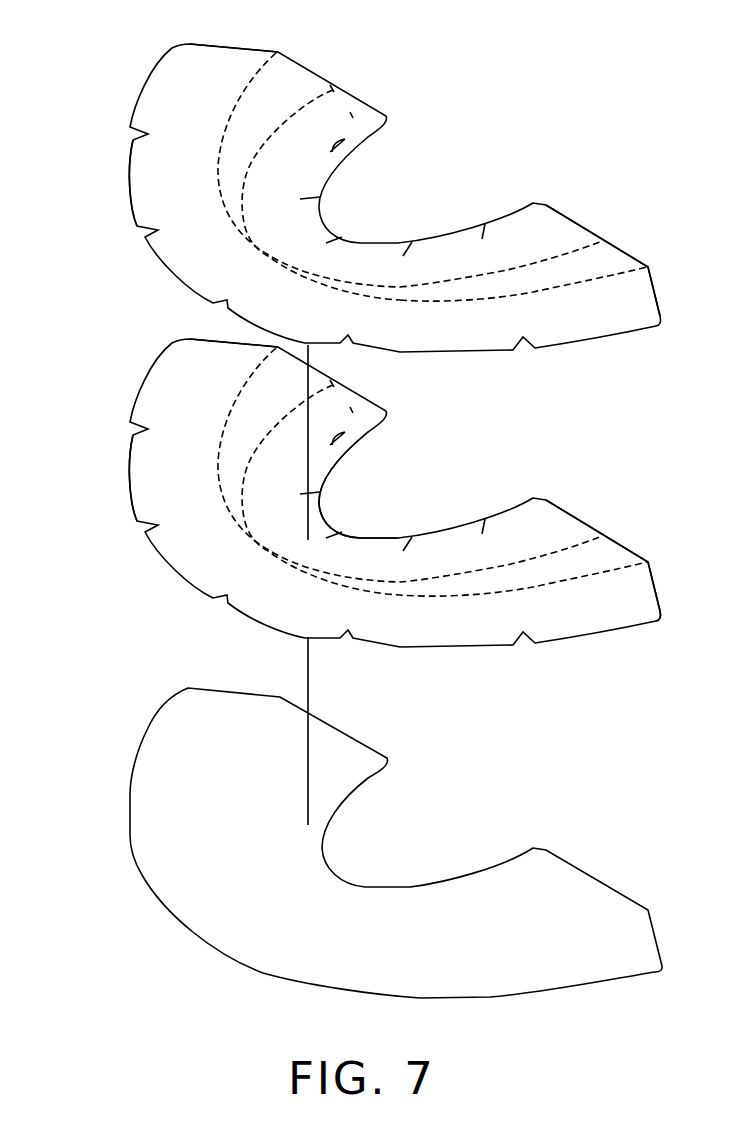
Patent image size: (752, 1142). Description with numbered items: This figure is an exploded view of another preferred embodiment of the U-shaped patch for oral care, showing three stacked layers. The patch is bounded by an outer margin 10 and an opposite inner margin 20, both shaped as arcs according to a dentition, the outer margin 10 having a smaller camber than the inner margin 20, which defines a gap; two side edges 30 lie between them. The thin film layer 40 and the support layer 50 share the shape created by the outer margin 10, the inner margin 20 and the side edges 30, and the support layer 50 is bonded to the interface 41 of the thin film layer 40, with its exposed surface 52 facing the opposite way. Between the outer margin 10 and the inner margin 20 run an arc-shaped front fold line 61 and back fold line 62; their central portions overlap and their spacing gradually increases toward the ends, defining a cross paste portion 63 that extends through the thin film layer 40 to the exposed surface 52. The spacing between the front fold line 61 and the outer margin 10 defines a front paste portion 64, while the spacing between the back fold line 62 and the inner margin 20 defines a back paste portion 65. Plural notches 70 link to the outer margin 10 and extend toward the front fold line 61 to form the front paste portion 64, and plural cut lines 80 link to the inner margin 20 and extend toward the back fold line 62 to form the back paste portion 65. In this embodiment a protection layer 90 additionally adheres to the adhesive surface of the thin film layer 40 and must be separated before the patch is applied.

The outer margin 10 is at (219, 613).
The inner margin 20 is at (328, 537).
The side edges 30 is at (208, 340).
The thin film layer 40 is at (132, 498).
The interface 41 is at (594, 556).
The support layer 50 is at (142, 73).
The exposed surface 52 is at (563, 224).
The front fold line 61 is at (597, 282).
The back fold line 62 is at (604, 241).
The cross paste portion 63 is at (287, 75).
The front paste portion 64 is at (200, 52).
The back paste portion 65 is at (350, 115).
The notches 70 is at (143, 231).
The cut lines 80 is at (345, 139).
The protection layer 90 is at (560, 885).